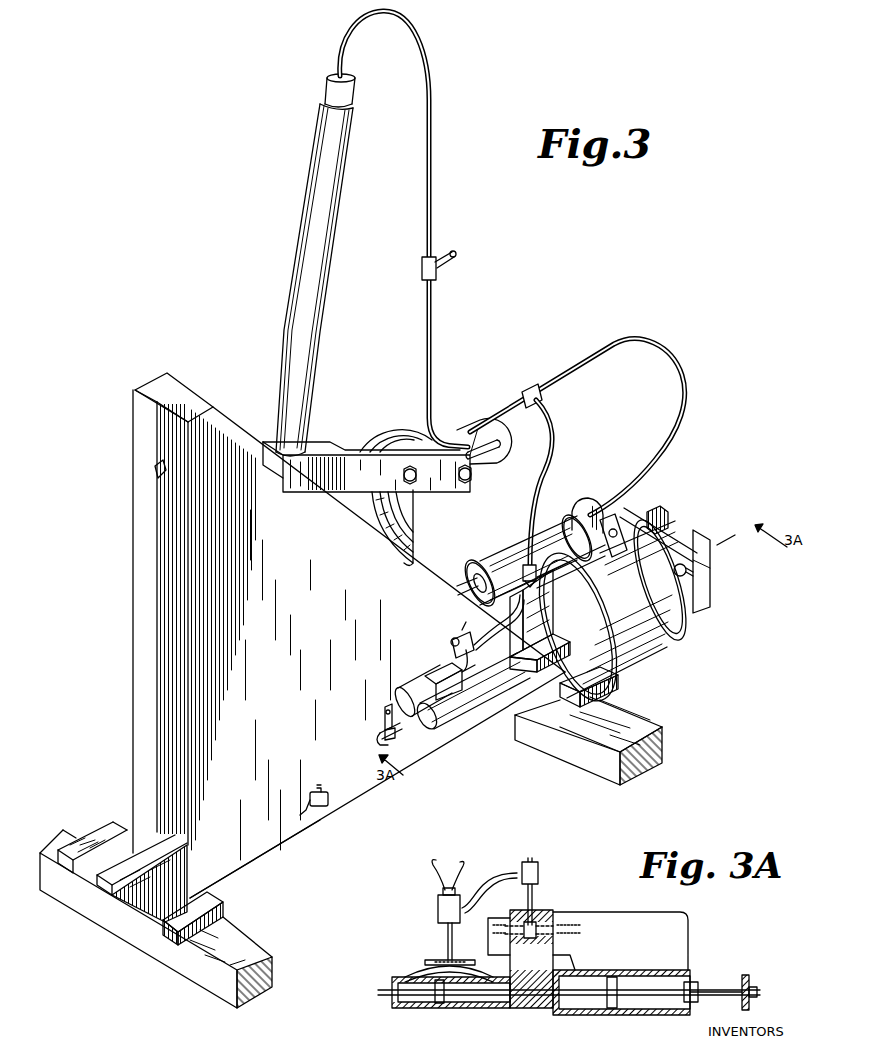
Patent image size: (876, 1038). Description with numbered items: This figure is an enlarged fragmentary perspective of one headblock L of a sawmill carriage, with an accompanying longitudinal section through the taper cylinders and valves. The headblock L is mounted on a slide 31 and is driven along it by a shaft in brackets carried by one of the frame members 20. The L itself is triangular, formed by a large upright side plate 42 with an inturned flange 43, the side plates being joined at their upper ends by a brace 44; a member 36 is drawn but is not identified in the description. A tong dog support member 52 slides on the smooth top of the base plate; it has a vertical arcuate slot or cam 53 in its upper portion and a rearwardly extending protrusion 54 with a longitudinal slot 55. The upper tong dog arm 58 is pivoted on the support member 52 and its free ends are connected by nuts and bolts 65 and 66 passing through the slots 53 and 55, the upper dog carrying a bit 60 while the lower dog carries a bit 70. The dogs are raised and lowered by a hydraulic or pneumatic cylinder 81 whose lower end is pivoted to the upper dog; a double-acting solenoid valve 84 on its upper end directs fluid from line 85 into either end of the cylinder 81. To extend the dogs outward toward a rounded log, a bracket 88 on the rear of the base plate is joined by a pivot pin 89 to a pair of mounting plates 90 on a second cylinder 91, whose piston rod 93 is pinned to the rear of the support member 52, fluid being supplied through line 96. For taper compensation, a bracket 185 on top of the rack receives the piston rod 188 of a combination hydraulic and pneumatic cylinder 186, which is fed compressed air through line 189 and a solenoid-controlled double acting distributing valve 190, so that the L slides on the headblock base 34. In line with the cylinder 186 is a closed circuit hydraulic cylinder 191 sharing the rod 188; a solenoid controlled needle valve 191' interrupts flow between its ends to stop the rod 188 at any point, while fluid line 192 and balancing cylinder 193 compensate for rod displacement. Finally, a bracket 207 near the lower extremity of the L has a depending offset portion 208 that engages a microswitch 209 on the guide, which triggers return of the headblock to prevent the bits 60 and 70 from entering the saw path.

In FIG. 3, the frame member 20 is at (262, 948).
In FIG. 3, the slide 31 is at (372, 790).
In FIG. 3, the headblock base 34 is at (215, 910).
In FIG. 3, the board 36 is at (100, 845).
In FIG. 3, the upright side plate 42 is at (256, 415).
In FIG. 3, the inturned flange 43 is at (176, 594).
In FIG. 3, the brace 44 is at (208, 383).
In FIG. 3, the tong dog support member 52 is at (427, 547).
In FIG. 3, the arcuate slot or cam 53 is at (415, 510).
In FIG. 3, the rearwardly extending protrusion 54 is at (505, 440).
In FIG. 3, the longitudinal slot 55 is at (500, 452).
In FIG. 3, the upper tong dog arm 58 is at (361, 432).
In FIG. 3, the bit 60 is at (160, 470).
In FIG. 3, the nuts and bolts 65 is at (410, 468).
In FIG. 3, the nuts and bolts 66 is at (465, 467).
In FIG. 3, the bit 70 is at (148, 832).
In FIG. 3, the hydraulic or pneumatic cylinder 81 is at (300, 222).
In FIG. 3, the double-acting solenoid valve 84 is at (326, 84).
In FIG. 3, the line 85 is at (431, 92).
In FIG. 3, the bracket 88 is at (578, 508).
In FIG. 3, the pivot pin 89 is at (640, 515).
In FIG. 3, the mounting plates 90 is at (597, 517).
In FIG. 3, the hydraulic or pneumatic cylinder 91 is at (514, 550).
In FIG. 3, the piston rod 93 is at (464, 580).
In FIG. 3, the line 96 is at (684, 400).
In FIG. 3, the bracket 185 is at (663, 540).
In FIG. 3A, the bracket 185 is at (745, 976).
In FIG. 3, the combination hydraulic and pneumatic cylinder 186 is at (645, 645).
In FIG. 3A, the combination hydraulic and pneumatic cylinder 186 is at (605, 1018).
In FIG. 3, the piston rod 188 is at (688, 570).
In FIG. 3A, the piston rod 188 is at (730, 998).
In FIG. 3, the line 189 is at (560, 434).
In FIG. 3A, the line 189 is at (540, 866).
In FIG. 3, the double acting distributing valve 190 is at (548, 598).
In FIG. 3A, the double acting distributing valve 190 is at (548, 908).
In FIG. 3, the closed circuit hydraulic cylinder 191 is at (471, 693).
In FIG. 3A, the closed circuit hydraulic cylinder 191 is at (451, 1003).
In FIG. 3, the solenoid controlled needle valve 191' is at (472, 633).
In FIG. 3A, the solenoid controlled needle valve 191' is at (440, 926).
In FIG. 3, the fluid line 192 is at (400, 735).
In FIG. 3A, the fluid line 192 is at (384, 988).
In FIG. 3, the balancing cylinder 193 is at (425, 685).
In FIG. 3, the bracket 207 is at (383, 712).
In FIG. 3, the depending offset portion 208 is at (383, 732).
In FIG. 3, the microswitch 209 is at (310, 800).